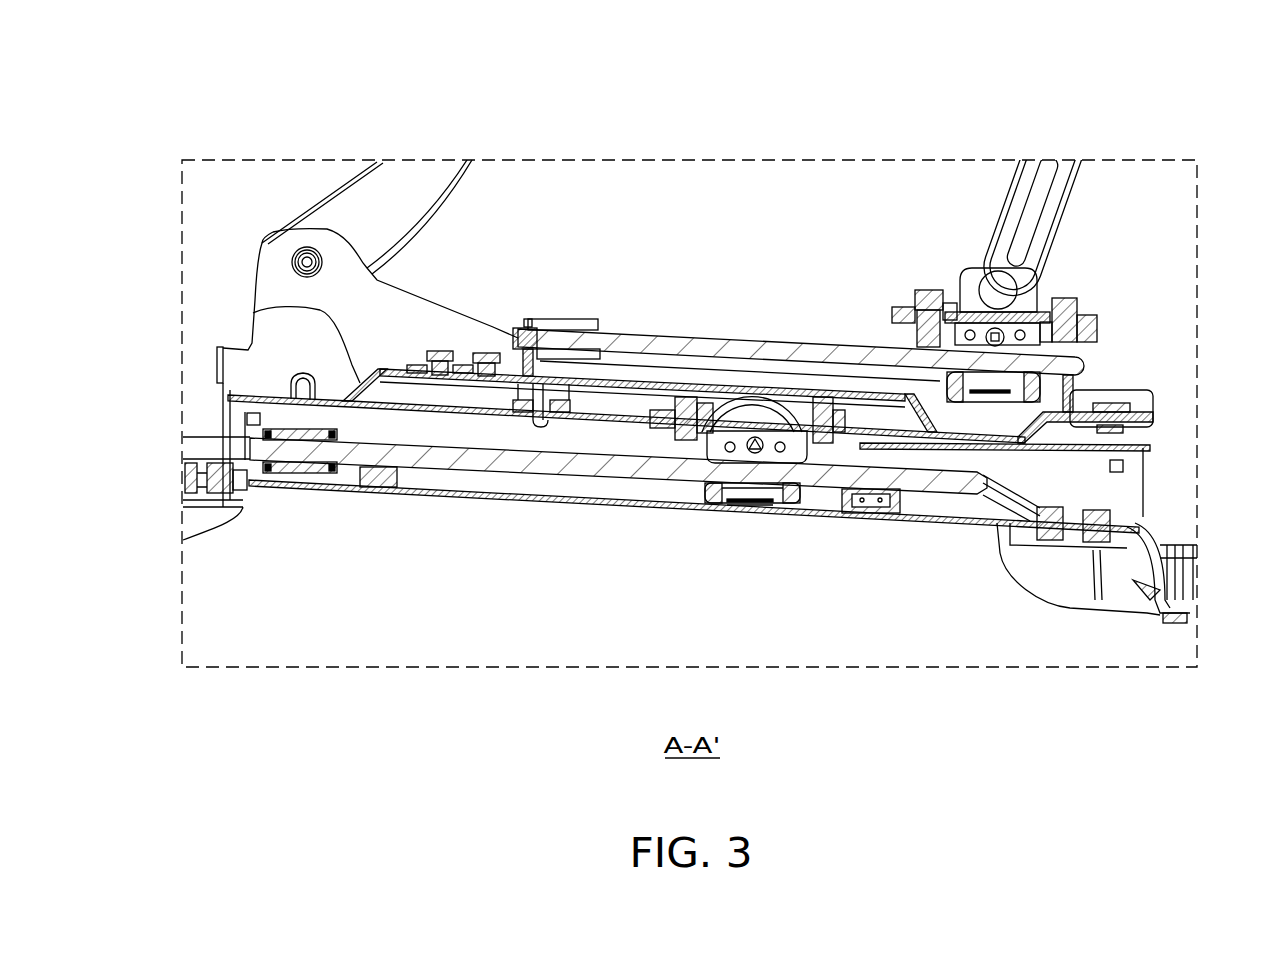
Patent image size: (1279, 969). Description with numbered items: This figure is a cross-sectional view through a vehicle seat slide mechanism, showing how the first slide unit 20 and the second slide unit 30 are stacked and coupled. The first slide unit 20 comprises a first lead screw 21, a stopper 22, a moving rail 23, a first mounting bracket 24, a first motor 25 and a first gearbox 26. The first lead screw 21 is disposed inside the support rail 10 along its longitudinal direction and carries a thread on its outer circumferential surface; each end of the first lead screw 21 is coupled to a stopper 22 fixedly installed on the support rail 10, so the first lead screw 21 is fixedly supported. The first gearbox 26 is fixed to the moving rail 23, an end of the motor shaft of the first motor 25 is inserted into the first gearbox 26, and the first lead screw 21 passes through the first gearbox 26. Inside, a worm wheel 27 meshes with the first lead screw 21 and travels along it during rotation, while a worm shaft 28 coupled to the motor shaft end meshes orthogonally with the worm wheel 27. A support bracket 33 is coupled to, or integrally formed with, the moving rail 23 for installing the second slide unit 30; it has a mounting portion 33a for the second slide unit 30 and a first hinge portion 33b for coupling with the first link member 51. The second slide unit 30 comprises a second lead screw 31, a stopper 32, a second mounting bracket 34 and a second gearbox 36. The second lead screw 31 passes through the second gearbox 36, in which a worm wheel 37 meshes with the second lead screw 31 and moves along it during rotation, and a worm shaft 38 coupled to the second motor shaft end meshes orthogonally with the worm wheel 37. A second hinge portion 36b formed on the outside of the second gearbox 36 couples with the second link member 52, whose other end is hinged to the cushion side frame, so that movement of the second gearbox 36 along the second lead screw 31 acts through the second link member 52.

The support rail 10 is at (473, 497).
The first slide unit 20 is at (740, 542).
The first lead screw 21 is at (570, 468).
The stopper 22 is at (297, 473).
The moving rail 23 is at (1122, 485).
The first mounting bracket 24 is at (657, 424).
The first motor 25 is at (727, 392).
The first gearbox 26 is at (853, 513).
The worm wheel 27 is at (754, 503).
The worm shaft 28 is at (752, 398).
The second slide unit 30 is at (917, 262).
The second lead screw 31 is at (660, 333).
The stopper 32 is at (562, 320).
The support bracket 33 is at (296, 235).
The mounting portion 33a is at (253, 313).
The first hinge portion 33b is at (258, 268).
The second mounting bracket 34 is at (893, 303).
The second gearbox 36 is at (1073, 400).
The second hinge portion 36b is at (1037, 284).
The worm wheel 37 is at (997, 375).
The worm shaft 38 is at (994, 328).
The first link member 51 is at (421, 180).
The second link member 52 is at (1078, 180).